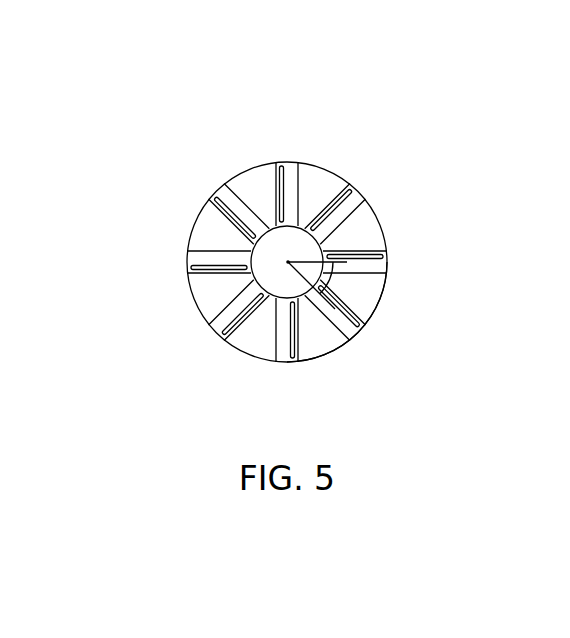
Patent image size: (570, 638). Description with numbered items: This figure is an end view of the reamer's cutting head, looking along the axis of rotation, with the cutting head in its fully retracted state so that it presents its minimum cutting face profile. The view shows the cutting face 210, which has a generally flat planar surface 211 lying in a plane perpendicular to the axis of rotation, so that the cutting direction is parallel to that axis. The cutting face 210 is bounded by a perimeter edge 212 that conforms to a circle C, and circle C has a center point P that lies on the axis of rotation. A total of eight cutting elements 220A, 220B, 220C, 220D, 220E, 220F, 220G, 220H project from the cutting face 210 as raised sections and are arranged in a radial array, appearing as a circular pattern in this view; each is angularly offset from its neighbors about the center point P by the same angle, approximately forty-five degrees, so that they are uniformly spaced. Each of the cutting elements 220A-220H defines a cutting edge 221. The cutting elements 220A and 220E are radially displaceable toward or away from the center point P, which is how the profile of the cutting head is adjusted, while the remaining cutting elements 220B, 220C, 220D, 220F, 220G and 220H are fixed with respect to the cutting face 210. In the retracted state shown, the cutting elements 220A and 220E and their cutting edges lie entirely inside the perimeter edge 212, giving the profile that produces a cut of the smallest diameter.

The cutting face 210 is at (323, 188).
The planar surface 211 is at (385, 232).
The perimeter edge 212 is at (380, 307).
The cutting element 220A is at (296, 162).
The cutting element 220B is at (347, 220).
The cutting element 220C is at (385, 267).
The cutting element 220D is at (343, 320).
The cutting element 220E is at (262, 359).
The cutting element 220F is at (228, 305).
The cutting element 220G is at (235, 252).
The cutting element 220H is at (222, 188).
The cutting edge 221 is at (279, 178).
The center point P is at (308, 284).
The circle C is at (380, 308).